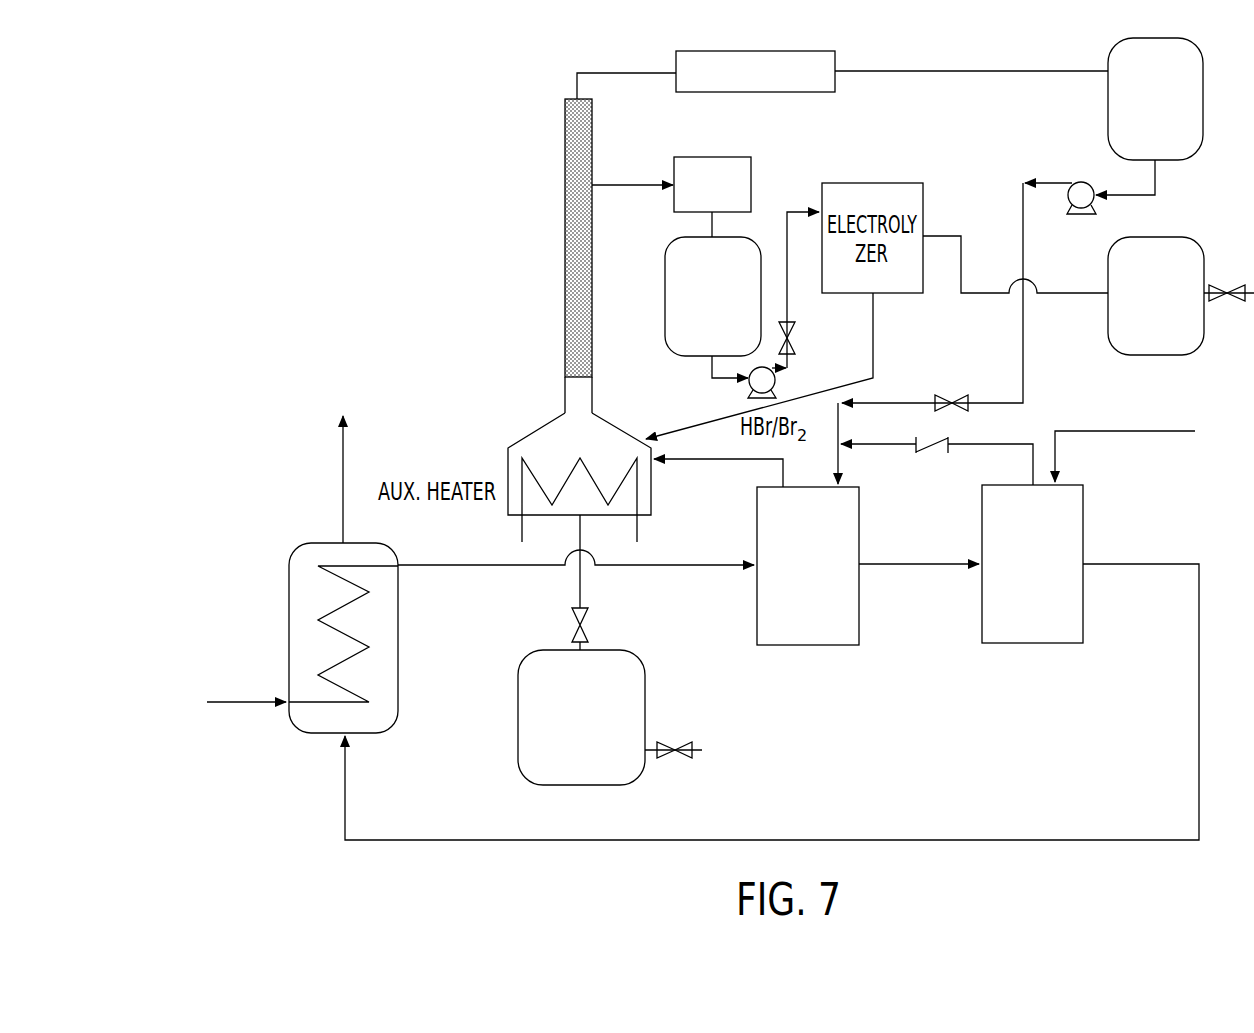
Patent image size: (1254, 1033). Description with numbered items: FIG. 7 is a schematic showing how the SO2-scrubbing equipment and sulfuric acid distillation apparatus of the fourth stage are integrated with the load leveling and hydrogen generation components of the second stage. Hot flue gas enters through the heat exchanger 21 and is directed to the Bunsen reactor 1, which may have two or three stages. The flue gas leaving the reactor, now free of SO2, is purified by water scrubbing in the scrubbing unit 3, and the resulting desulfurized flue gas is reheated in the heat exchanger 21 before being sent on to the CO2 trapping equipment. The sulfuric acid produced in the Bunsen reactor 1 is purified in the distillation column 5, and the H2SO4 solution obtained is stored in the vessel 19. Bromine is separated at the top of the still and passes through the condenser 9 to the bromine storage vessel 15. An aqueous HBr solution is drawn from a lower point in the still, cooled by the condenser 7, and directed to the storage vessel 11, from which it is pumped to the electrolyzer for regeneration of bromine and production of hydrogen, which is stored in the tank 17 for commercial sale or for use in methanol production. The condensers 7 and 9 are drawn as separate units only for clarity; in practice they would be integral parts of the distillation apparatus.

The Bunsen reactor 1 is at (814, 607).
The water scrubbing unit 3 is at (1041, 607).
The distillation column 5 is at (563, 192).
The condenser 7 is at (719, 197).
The condenser 9 is at (827, 87).
The storage vessel 11 is at (665, 340).
The bromine storage vessel 15 is at (1168, 146).
The tank 17 is at (1168, 343).
The vessel 19 is at (595, 766).
The heat exchanger 21 is at (289, 596).